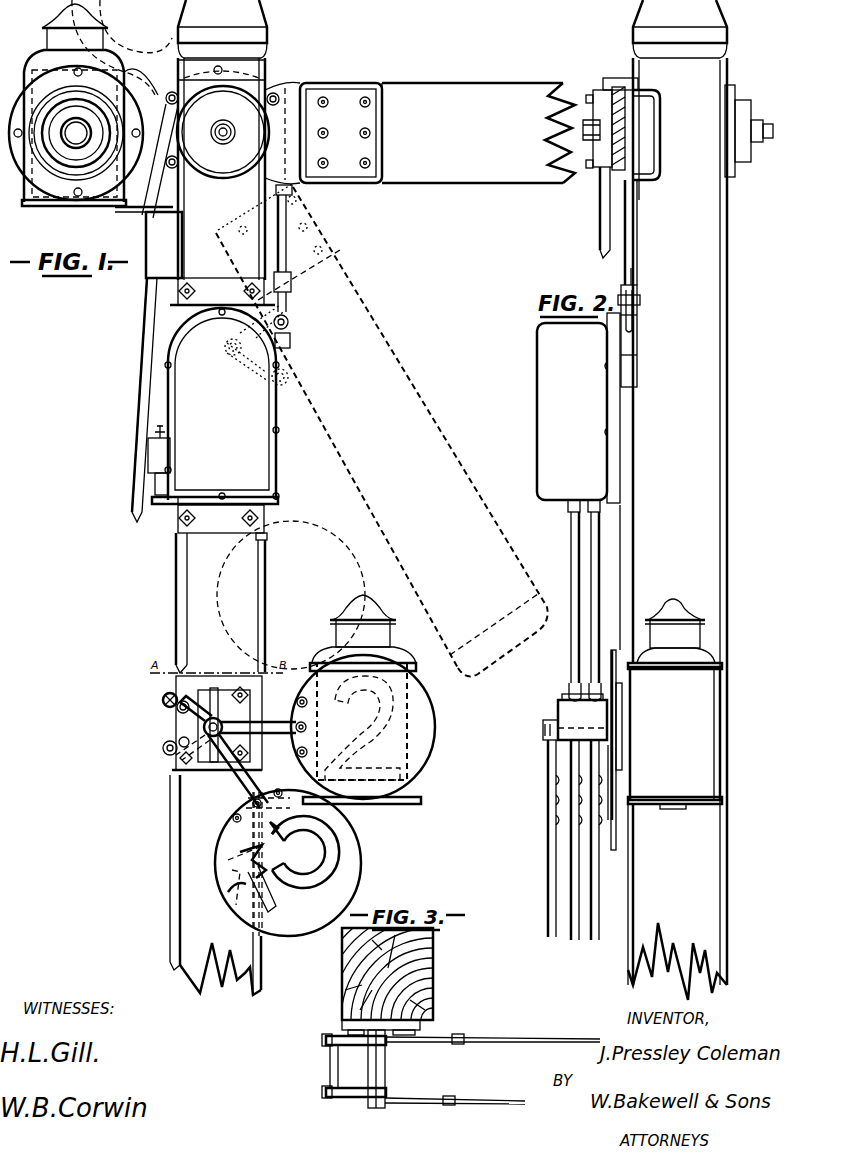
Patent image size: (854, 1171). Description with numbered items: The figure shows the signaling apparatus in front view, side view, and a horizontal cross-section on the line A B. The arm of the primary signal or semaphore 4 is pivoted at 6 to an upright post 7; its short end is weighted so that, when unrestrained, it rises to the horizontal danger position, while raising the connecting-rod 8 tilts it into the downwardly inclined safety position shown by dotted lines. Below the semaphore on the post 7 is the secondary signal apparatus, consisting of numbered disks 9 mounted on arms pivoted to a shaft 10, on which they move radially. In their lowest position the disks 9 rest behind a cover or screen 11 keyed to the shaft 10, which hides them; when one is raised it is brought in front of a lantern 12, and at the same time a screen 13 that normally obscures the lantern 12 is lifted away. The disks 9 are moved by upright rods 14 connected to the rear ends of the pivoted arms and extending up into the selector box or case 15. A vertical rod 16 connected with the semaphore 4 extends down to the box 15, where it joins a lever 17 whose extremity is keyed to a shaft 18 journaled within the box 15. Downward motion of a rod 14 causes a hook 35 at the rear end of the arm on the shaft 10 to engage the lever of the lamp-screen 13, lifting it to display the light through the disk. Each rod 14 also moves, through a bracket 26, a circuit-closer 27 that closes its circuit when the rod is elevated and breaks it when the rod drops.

In FIG. 1, the arm of the primary signal or semaphore 4 is at (395, 379).
In FIG. 1, the pivot 6 is at (235, 130).
In FIG. 1, the upright post 7 is at (242, 13).
In FIG. 2, the upright post 7 is at (678, 500).
In FIG. 3, the upright post 7 is at (392, 970).
In FIG. 1, the connecting-rod 8 is at (142, 318).
In FIG. 2, the connecting-rod 8 is at (598, 228).
In FIG. 1, the disks 9 is at (354, 858).
In FIG. 2, the disks 9 is at (573, 940).
In FIG. 1, the shaft 10 is at (229, 725).
In FIG. 2, the shaft 10 is at (541, 728).
In FIG. 3, the shaft 10 is at (380, 1072).
In FIG. 1, the cover or screen 11 is at (259, 858).
In FIG. 2, the cover or screen 11 is at (547, 898).
In FIG. 3, the cover or screen 11 is at (467, 1100).
In FIG. 1, the lantern 12 is at (388, 637).
In FIG. 2, the lantern 12 is at (675, 704).
In FIG. 1, the screen 13 is at (326, 662).
In FIG. 2, the screen 13 is at (610, 810).
In FIG. 3, the screen 13 is at (486, 1041).
In FIG. 1, the upright rods 14 is at (188, 621).
In FIG. 2, the upright rods 14 is at (571, 565).
In FIG. 1, the selector box or case 15 is at (215, 406).
In FIG. 2, the selector box or case 15 is at (572, 411).
In FIG. 1, the vertical rod 16 is at (284, 247).
In FIG. 2, the vertical rod 16 is at (637, 232).
In FIG. 1, the lever 17 is at (287, 333).
In FIG. 2, the lever 17 is at (636, 341).
In FIG. 1, the shaft 18 is at (228, 350).
In FIG. 1, the bracket 26 is at (158, 506).
In FIG. 2, the bracket 26 is at (576, 513).
In FIG. 1, the circuit-closer 27 is at (159, 460).
In FIG. 1, the hook 35 is at (164, 699).